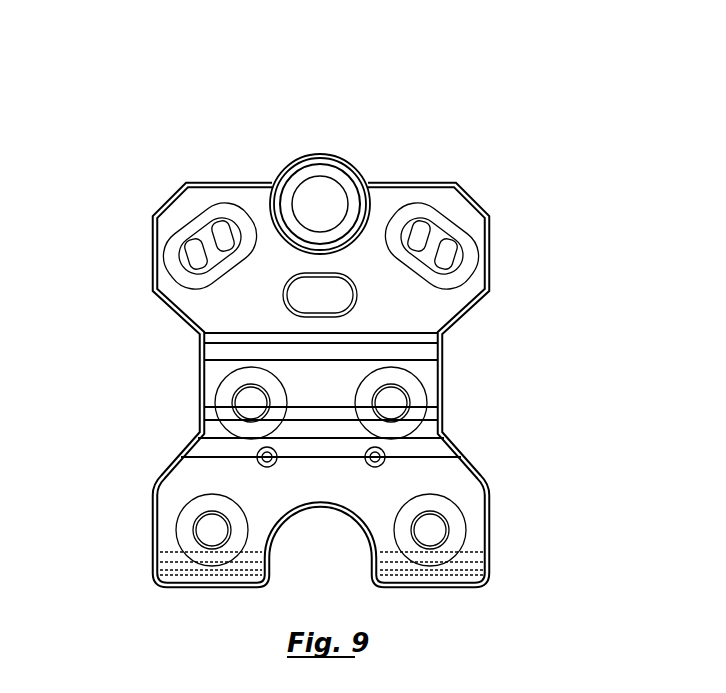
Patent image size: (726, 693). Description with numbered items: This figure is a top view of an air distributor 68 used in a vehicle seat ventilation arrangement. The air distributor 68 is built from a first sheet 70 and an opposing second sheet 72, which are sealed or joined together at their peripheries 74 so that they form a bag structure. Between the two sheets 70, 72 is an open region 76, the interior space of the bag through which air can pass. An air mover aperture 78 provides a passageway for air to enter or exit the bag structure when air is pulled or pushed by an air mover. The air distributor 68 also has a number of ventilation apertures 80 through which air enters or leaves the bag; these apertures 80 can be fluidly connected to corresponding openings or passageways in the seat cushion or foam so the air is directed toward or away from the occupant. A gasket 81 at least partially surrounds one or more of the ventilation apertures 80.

The air distributor 68 is at (152, 192).
The first sheet 70 is at (423, 318).
The second sheet 72 is at (452, 478).
The peripheries 74 is at (492, 548).
The open region 76 is at (467, 515).
The air mover aperture 78 is at (328, 194).
The ventilation apertures 80 is at (433, 243).
The gasket 81 is at (447, 230).